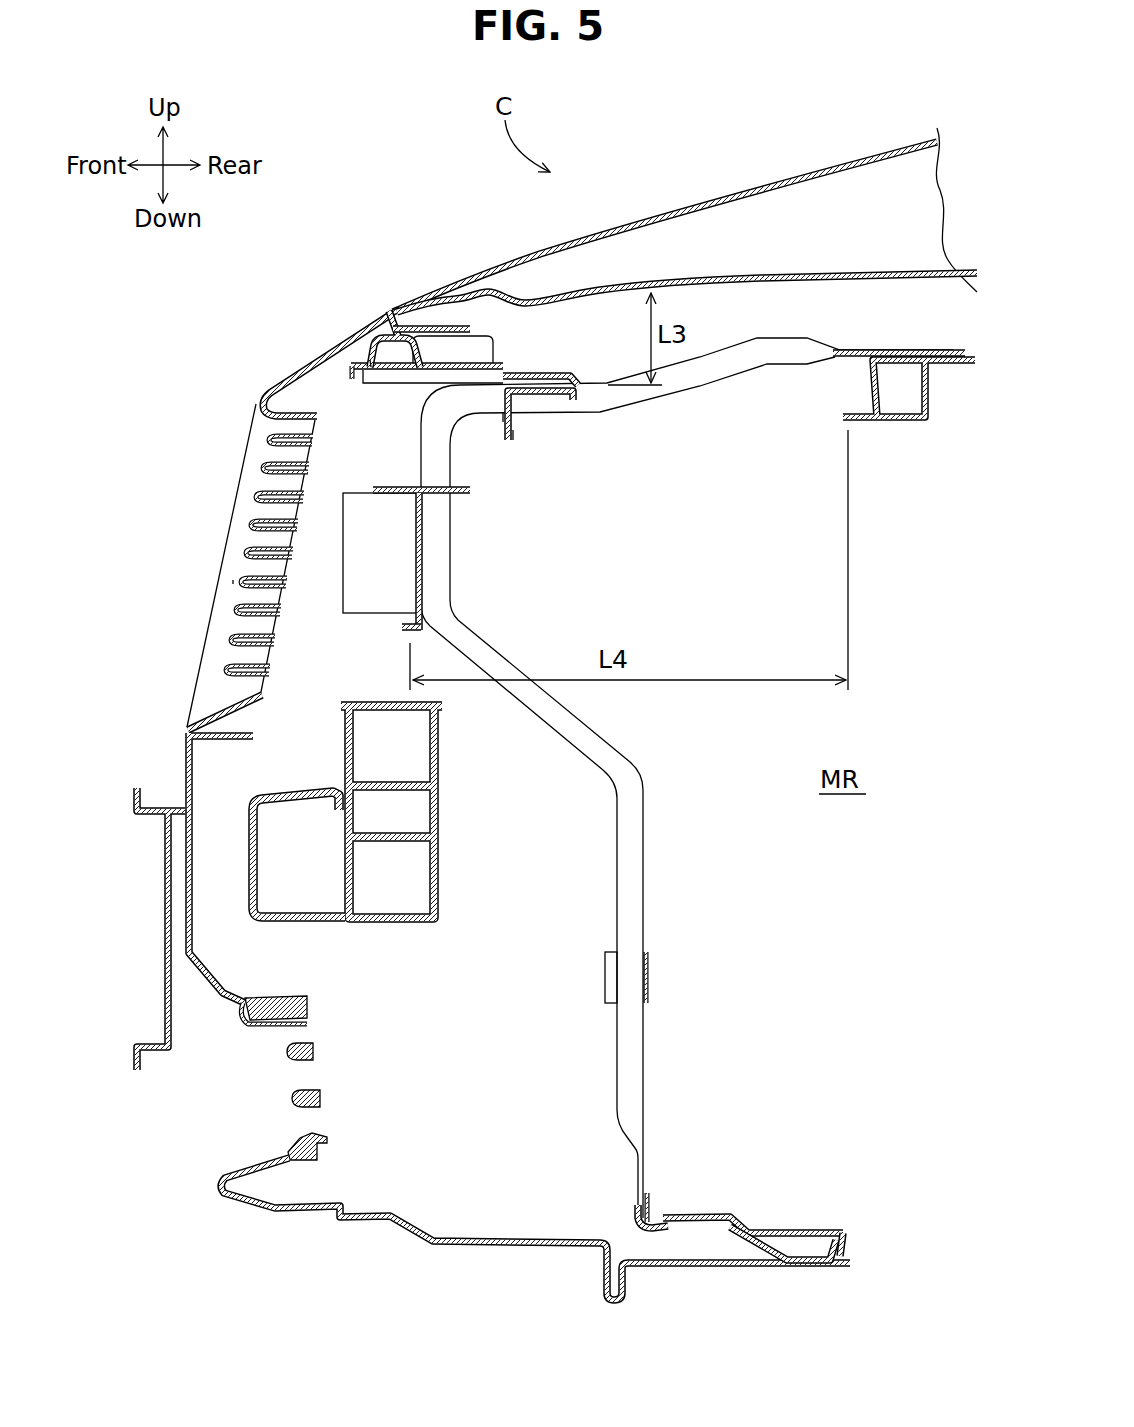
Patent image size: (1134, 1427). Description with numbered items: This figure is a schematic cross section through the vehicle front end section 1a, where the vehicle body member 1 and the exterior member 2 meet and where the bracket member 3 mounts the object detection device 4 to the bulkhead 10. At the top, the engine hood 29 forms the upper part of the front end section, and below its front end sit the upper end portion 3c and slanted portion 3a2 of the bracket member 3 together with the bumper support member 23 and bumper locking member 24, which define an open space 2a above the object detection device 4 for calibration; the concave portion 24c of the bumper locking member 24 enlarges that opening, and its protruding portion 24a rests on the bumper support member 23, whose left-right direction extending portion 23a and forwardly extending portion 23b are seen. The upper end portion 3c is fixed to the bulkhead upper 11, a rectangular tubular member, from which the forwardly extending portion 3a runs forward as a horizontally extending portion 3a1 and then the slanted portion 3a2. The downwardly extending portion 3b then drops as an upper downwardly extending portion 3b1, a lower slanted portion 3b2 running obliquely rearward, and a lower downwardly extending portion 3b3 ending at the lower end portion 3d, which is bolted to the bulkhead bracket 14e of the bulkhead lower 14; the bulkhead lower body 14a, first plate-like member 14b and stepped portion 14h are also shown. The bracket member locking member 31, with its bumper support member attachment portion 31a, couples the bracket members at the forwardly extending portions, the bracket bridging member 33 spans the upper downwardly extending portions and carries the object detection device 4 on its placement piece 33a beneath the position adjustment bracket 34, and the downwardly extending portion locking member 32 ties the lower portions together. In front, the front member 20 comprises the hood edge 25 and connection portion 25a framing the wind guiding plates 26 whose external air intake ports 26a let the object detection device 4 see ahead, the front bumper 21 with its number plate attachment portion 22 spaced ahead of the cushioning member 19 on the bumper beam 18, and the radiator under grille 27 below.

The vehicle body member 1 is at (347, 870).
The vehicle front end section 1a is at (398, 290).
The exterior member 2 is at (537, 704).
The open space 2a is at (428, 404).
The bracket member 3 is at (693, 754).
The forwardly extending portion 3a is at (712, 358).
The horizontally extending portion 3a1 is at (790, 337).
The slanted portion 3a2 is at (708, 390).
The downwardly extending portion 3b is at (598, 801).
The upper downwardly extending portion 3b1 is at (452, 536).
The lower slanted portion 3b2 is at (558, 742).
The lower downwardly extending portion 3b3 is at (645, 1066).
The upper end portion 3c is at (920, 350).
The lower end portion 3d is at (634, 1206).
The object detection device 4 is at (365, 558).
The bulkhead 10 is at (815, 838).
The bulkhead upper 11 is at (900, 421).
The bulkhead lower 14 is at (805, 1236).
The bulkhead lower body 14a is at (738, 1241).
The first plate-like member 14b is at (800, 1226).
The bulkhead bracket 14e is at (652, 1201).
The stepped portion 14h is at (812, 1249).
The bumper beam 18 is at (403, 926).
The cushioning member 19 is at (290, 930).
The front member 20 is at (474, 803).
The front bumper 21 is at (188, 766).
The number plate attachment portion 22 is at (165, 932).
The bumper support member 23 is at (522, 370).
The left-right direction extending portion 23a is at (500, 425).
The forwardly extending portion 23b is at (357, 385).
The bumper locking member 24 is at (388, 310).
The protruding portion 24a is at (364, 362).
The concave portion 24c is at (436, 327).
The hood edge 25 is at (310, 357).
The connection portion 25a is at (240, 475).
The wind guiding plate 26 is at (265, 530).
The external air intake port 26a is at (255, 632).
The radiator under grille 27 is at (290, 1097).
The engine hood 29 is at (707, 197).
The bracket member locking member 31 is at (556, 396).
The bumper support member attachment portion 31a is at (519, 426).
The downwardly extending portion locking member 32 is at (651, 978).
The bracket bridging member 33 is at (425, 561).
The object detection device placement piece 33a is at (406, 629).
The position adjustment bracket 34 is at (410, 488).